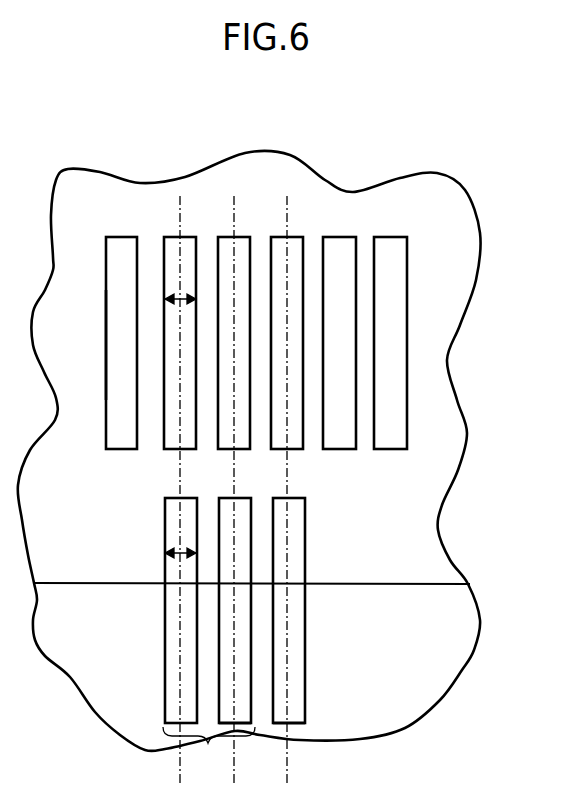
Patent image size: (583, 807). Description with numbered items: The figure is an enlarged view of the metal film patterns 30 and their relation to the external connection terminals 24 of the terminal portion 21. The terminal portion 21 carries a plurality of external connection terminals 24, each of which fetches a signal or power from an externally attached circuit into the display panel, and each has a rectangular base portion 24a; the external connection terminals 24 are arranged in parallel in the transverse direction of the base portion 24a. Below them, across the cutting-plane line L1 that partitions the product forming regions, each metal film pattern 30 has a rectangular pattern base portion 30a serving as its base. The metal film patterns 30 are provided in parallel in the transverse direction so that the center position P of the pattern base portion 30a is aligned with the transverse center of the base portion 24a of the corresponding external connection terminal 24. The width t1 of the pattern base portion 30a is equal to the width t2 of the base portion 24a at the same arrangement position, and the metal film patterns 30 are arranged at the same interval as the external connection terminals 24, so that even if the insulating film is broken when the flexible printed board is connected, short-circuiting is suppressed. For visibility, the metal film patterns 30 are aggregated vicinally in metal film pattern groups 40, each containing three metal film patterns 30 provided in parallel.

The terminal portion 21 is at (287, 440).
The external connection terminal 24 is at (256, 269).
The base portion 24a is at (77, 383).
The metal film pattern 30 is at (197, 592).
The pattern base portion 30a is at (302, 664).
The metal film pattern group 40 is at (209, 749).
The width of the pattern base portion t1 is at (167, 549).
The width of the base portion t2 is at (167, 301).
The cutting-plane line L1 is at (289, 528).
The center position P is at (230, 501).